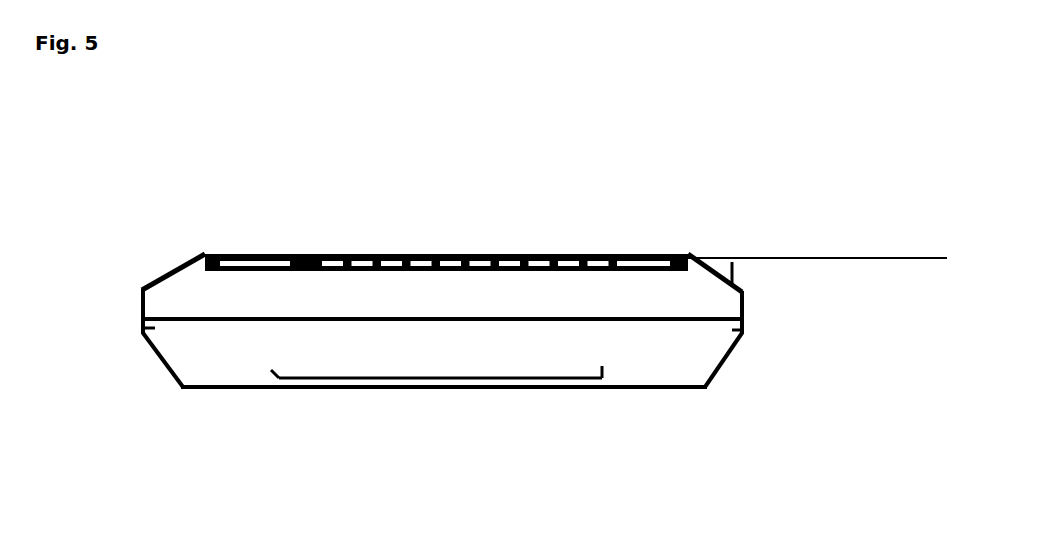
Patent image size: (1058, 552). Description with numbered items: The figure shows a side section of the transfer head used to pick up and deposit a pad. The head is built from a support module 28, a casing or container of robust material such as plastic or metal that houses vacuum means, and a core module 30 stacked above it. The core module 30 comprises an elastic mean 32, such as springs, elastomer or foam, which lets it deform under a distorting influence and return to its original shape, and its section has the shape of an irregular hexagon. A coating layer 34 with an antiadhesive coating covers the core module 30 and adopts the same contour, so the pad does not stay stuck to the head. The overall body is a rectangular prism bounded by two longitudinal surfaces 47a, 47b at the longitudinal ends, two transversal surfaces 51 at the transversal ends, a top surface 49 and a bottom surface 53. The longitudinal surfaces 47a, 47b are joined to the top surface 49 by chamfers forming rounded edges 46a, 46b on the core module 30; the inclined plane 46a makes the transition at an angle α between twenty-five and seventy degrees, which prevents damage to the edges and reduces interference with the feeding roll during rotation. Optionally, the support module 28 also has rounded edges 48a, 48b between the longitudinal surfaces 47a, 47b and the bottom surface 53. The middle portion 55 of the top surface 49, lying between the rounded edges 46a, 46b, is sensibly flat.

The support module 28 is at (328, 357).
The core module 30 is at (442, 390).
The elastic mean 32 is at (495, 300).
The coating layer 34 is at (290, 262).
The first rounded edge 46a is at (703, 272).
The second rounded edge 46b is at (177, 277).
The longitudinal surface 47a is at (743, 317).
The longitudinal surface 47b is at (140, 308).
The rounded edge 48a is at (725, 360).
The rounded edge 48b is at (162, 360).
The top surface 49 is at (445, 206).
The transversal surface 51 is at (243, 335).
The bottom surface 53 is at (662, 388).
The middle portion 55 is at (448, 253).